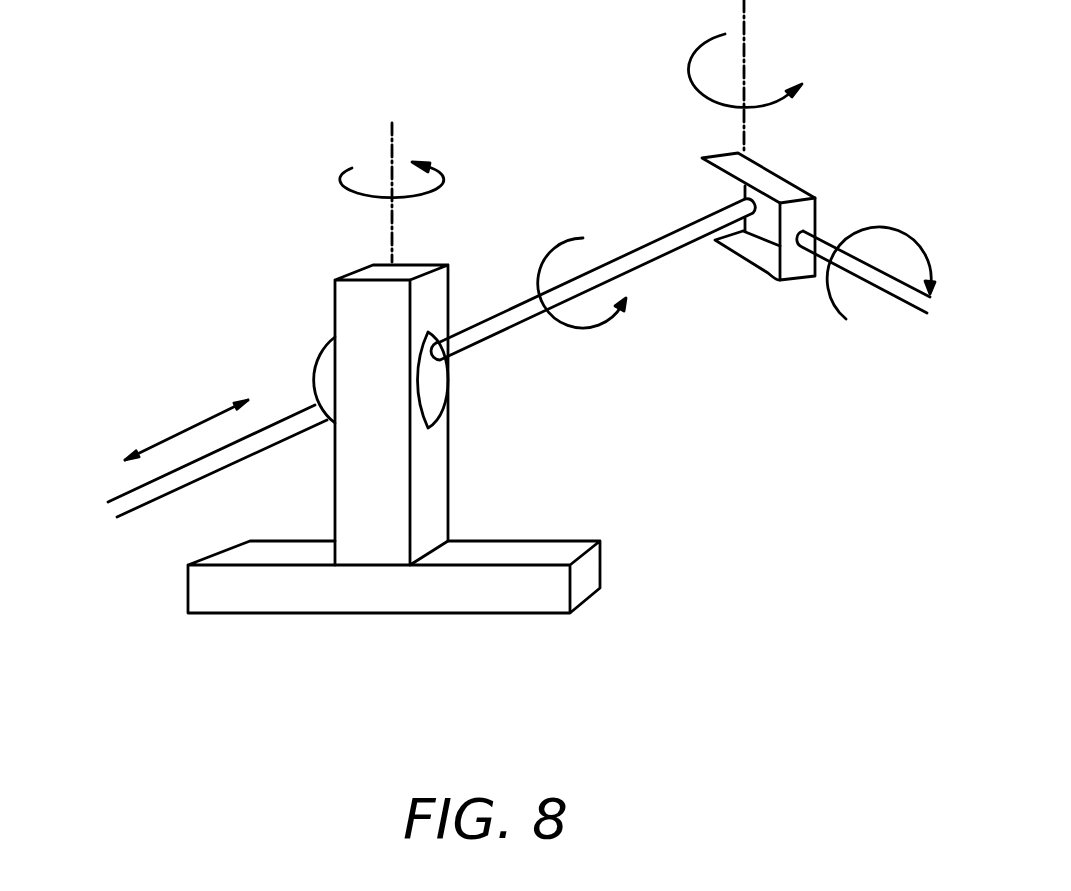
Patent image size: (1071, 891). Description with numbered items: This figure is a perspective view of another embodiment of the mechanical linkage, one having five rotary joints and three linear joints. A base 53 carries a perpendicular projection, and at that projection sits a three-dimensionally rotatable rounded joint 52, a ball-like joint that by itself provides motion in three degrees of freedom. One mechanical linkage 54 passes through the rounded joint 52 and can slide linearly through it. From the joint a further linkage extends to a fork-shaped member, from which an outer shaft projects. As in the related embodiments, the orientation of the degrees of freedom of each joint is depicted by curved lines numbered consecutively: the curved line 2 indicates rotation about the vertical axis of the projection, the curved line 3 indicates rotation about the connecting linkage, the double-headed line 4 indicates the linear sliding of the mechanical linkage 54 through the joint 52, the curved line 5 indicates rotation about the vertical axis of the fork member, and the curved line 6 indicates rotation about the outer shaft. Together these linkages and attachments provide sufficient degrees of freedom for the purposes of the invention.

The degree of freedom 2 is at (392, 192).
The degree of freedom 3 is at (593, 280).
The degree of freedom 4 is at (186, 430).
The degree of freedom 5 is at (745, 115).
The degree of freedom 6 is at (879, 273).
The rounded joint 52 is at (323, 367).
The base 53 is at (543, 552).
The mechanical linkage 54 is at (148, 502).